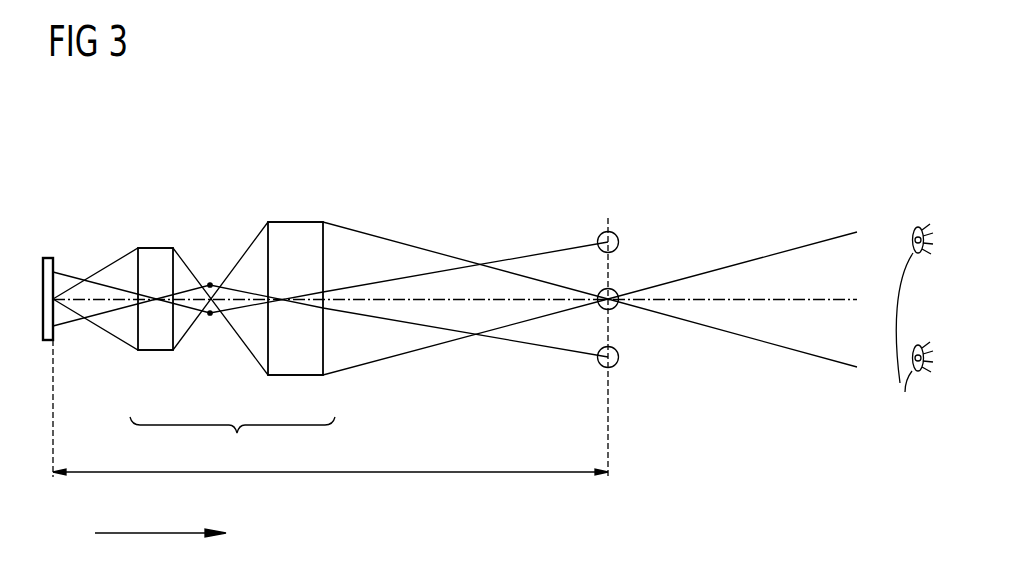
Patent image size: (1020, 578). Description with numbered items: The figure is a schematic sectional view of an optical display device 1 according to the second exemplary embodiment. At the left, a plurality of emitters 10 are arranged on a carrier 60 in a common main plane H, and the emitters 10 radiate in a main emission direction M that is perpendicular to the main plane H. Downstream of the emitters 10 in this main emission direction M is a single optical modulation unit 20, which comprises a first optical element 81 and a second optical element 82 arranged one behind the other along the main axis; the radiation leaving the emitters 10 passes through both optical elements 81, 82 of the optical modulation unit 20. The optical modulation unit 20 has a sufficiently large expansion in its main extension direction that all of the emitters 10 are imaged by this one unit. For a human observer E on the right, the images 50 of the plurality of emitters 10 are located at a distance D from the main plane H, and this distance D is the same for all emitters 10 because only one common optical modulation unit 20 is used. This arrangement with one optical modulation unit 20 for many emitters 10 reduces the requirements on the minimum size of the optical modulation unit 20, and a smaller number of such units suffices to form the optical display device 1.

The optical display device 1 is at (420, 213).
The carrier 60 is at (43, 259).
The emitters 10 is at (56, 272).
The first optical element 81 is at (152, 343).
The second optical element 82 is at (300, 365).
The optical modulation unit 20 is at (232, 442).
The images 50 is at (615, 294).
The human observer E is at (910, 320).
The main plane H is at (53, 385).
The distance D is at (330, 360).
The main emission direction M is at (160, 521).